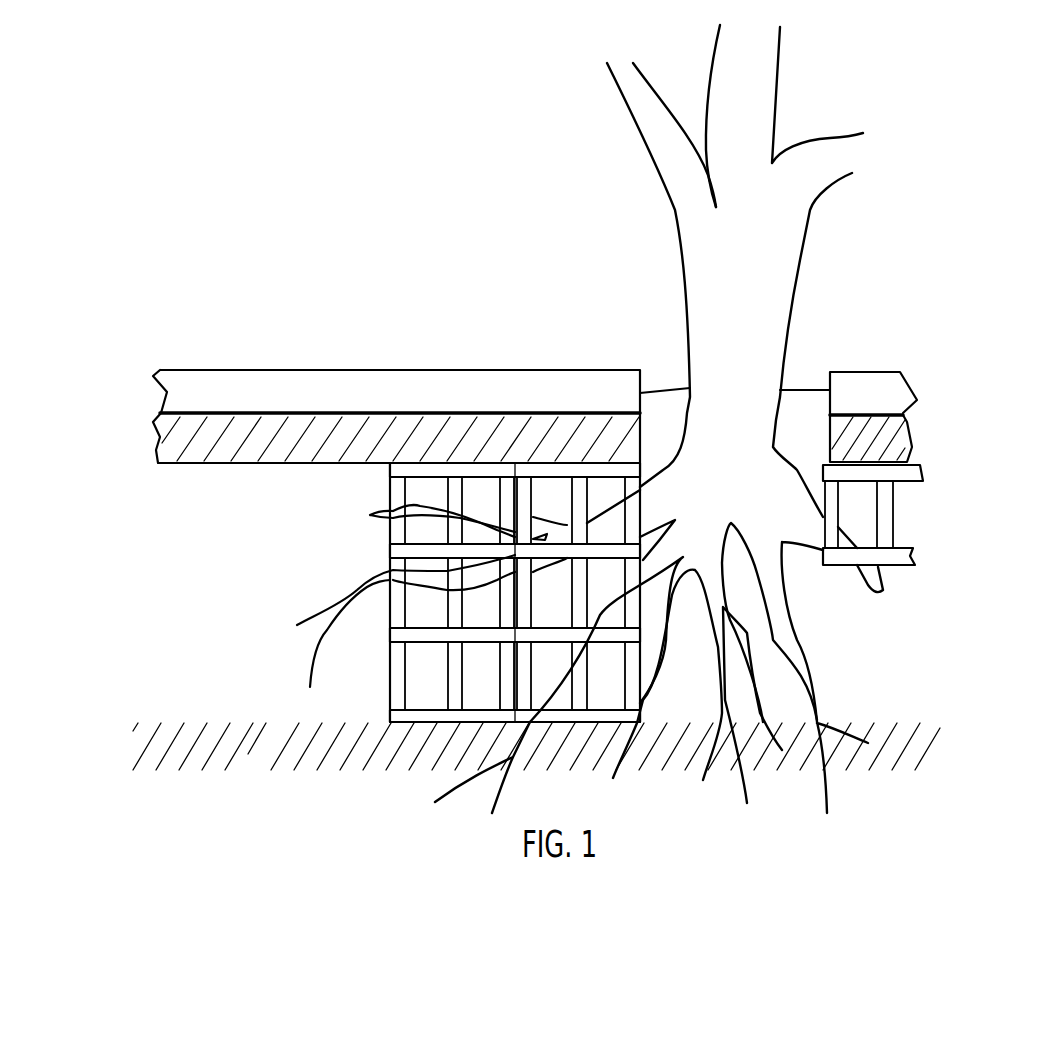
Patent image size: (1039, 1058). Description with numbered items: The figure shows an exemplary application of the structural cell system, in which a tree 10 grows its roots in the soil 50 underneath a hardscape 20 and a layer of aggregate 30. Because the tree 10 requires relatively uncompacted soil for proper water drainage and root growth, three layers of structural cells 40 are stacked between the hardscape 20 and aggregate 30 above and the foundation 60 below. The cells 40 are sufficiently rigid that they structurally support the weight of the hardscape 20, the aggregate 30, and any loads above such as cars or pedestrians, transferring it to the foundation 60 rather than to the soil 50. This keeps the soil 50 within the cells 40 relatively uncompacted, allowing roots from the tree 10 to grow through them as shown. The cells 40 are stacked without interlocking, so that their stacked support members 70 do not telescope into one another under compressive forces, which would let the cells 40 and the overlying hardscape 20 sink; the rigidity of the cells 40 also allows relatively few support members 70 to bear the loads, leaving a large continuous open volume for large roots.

The tree 10 is at (770, 297).
The hardscape 20 is at (330, 408).
The layer of aggregate 30 is at (330, 453).
The structural cells 40 is at (370, 515).
The soil 50 is at (252, 603).
The foundation 60 is at (282, 763).
The support members 70 is at (393, 531).